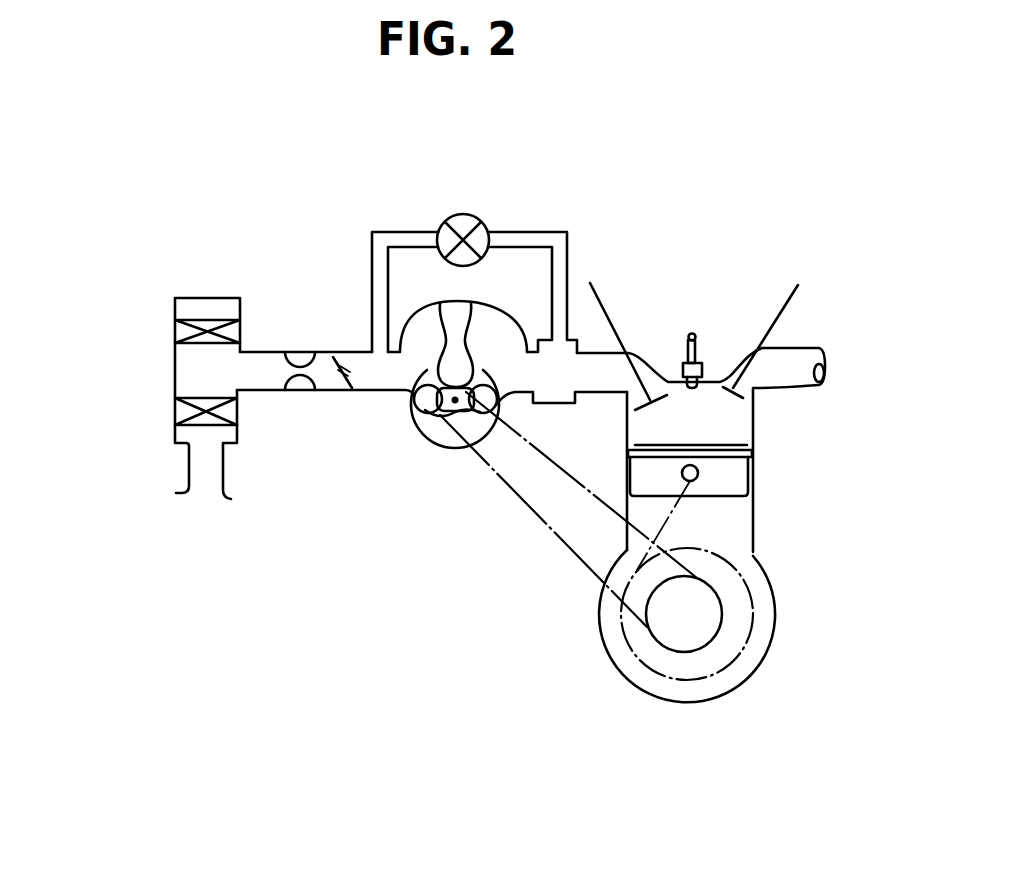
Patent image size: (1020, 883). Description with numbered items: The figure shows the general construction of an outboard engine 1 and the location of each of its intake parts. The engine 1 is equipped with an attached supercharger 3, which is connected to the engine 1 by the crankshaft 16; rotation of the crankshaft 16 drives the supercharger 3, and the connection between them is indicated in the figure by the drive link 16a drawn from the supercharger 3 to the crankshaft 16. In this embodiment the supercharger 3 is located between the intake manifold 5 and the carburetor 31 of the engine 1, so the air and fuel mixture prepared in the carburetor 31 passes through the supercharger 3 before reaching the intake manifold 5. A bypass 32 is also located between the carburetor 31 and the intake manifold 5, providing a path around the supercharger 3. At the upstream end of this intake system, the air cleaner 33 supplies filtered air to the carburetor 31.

The outboard engine 1 is at (742, 425).
The supercharger 3 is at (437, 437).
The intake manifold 5 is at (588, 366).
The crankshaft 16 is at (698, 642).
The drive linkage 16a is at (547, 530).
The carburetor 31 is at (303, 393).
The bypass 32 is at (409, 235).
The air cleaner 33 is at (175, 432).